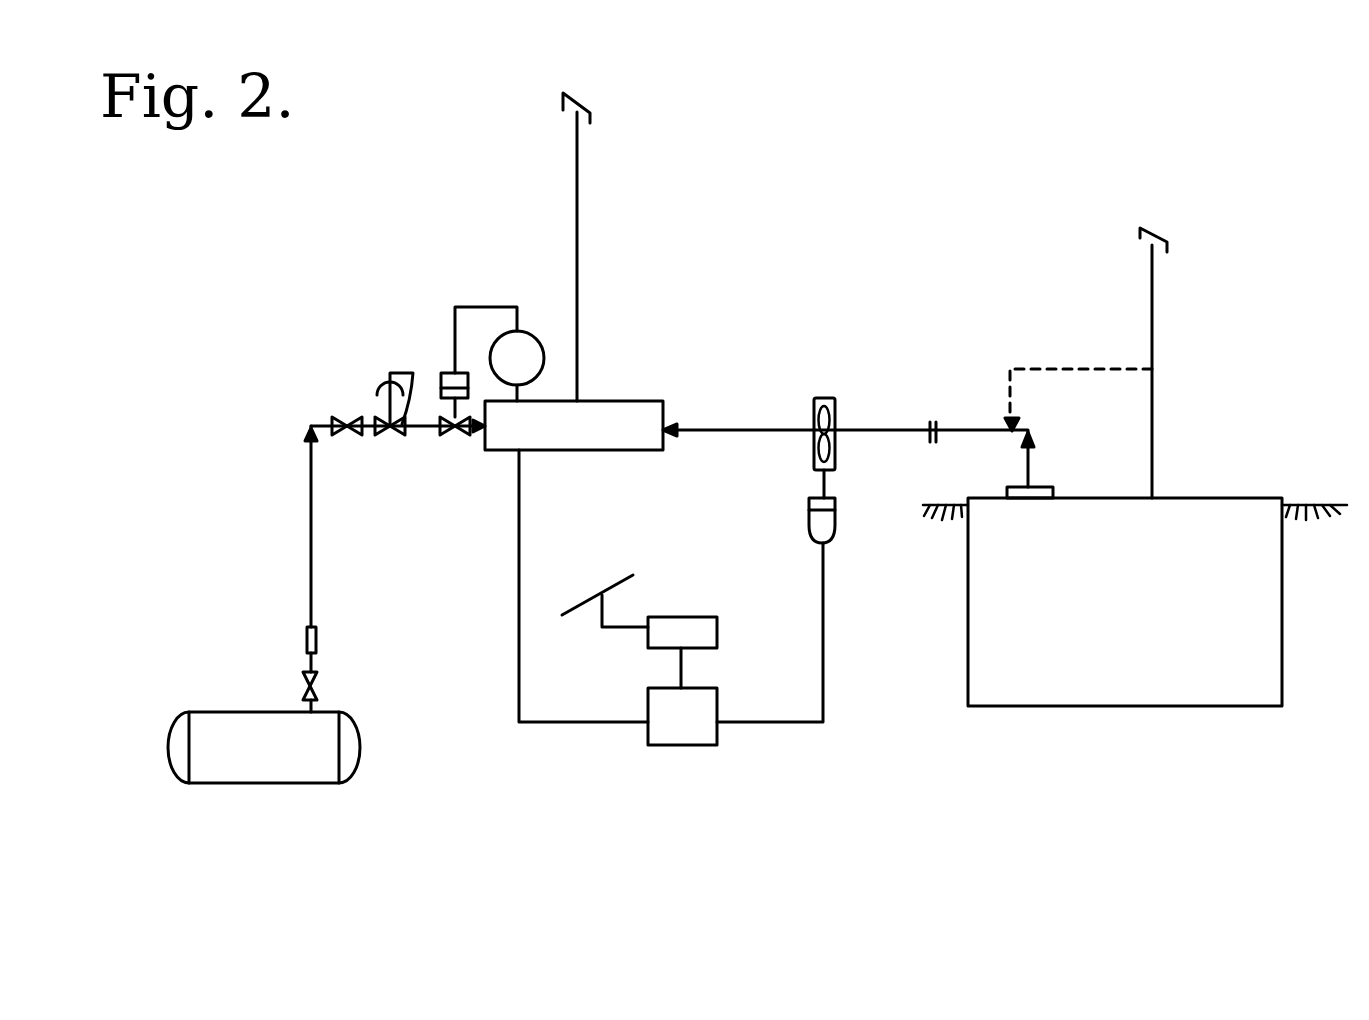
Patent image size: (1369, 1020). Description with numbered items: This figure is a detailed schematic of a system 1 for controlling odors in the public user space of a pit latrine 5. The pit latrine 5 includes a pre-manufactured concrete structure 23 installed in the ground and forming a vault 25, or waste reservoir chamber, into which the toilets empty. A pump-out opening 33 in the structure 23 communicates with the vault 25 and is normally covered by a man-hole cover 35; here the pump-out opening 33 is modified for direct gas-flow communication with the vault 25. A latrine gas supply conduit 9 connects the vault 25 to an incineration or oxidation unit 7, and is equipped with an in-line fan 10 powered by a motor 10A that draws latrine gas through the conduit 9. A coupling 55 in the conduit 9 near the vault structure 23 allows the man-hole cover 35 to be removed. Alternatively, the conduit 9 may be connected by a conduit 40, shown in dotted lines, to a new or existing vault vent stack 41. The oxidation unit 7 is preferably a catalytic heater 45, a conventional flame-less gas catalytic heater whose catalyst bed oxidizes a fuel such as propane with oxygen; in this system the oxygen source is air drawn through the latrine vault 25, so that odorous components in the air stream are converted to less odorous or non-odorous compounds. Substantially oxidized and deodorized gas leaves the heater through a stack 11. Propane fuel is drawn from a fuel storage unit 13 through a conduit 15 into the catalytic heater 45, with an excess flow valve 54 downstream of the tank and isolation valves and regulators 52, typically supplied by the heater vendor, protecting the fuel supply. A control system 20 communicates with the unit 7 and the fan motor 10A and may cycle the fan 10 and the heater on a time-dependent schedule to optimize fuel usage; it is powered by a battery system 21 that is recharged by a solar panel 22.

The system 1 is at (759, 292).
The pit latrine 5 is at (1200, 488).
The incineration or oxidation unit 7 is at (546, 470).
The latrine gas supply conduit 9 is at (731, 431).
The in-line fan 10 is at (835, 461).
The motor 10A is at (835, 534).
The stack 11 is at (577, 232).
The fuel storage unit 13 is at (295, 783).
The conduit 15 is at (311, 518).
The control system 20 is at (717, 700).
The battery system 21 is at (717, 628).
The solar panel 22 is at (616, 583).
The concrete structure 23 is at (1282, 607).
The vault 25 is at (1226, 505).
The pump-out opening 33 is at (1021, 498).
The man-hole cover 35 is at (1053, 488).
The conduit 40 is at (1045, 362).
The vault vent stack 41 is at (1150, 338).
The catalytic heater 45 is at (621, 401).
The isolation valves and regulators 52 is at (395, 330).
The excess flow valve 54 is at (307, 641).
The coupling 55 is at (937, 423).